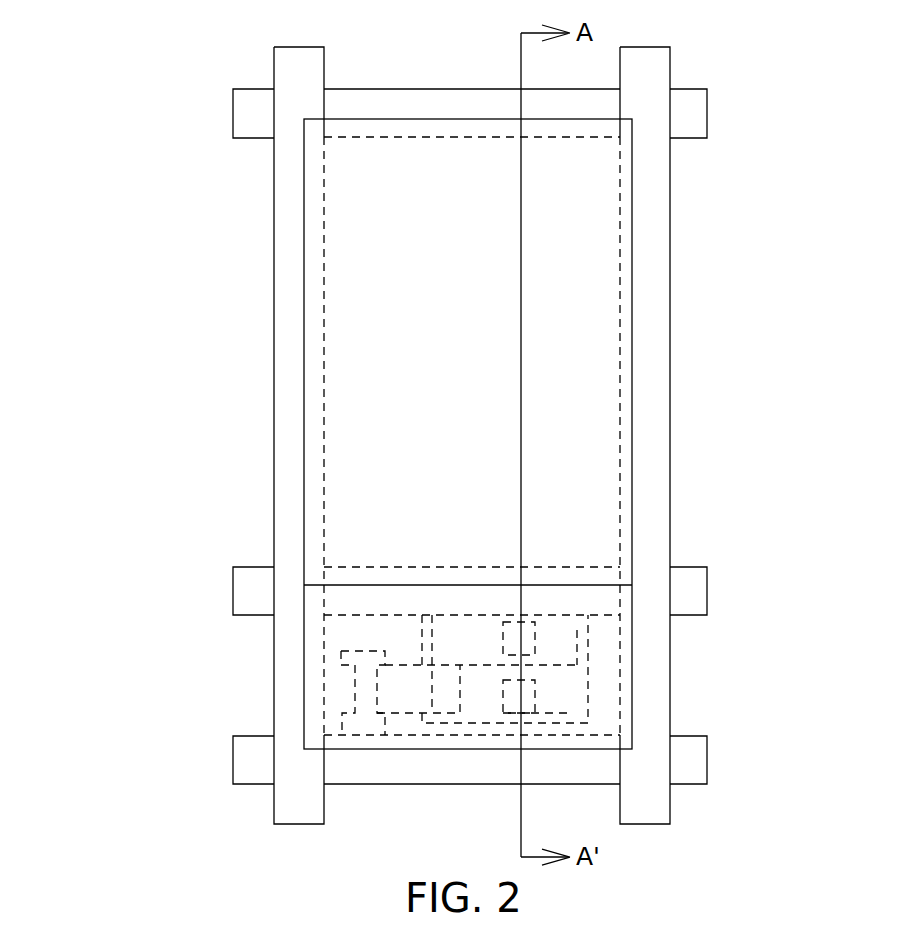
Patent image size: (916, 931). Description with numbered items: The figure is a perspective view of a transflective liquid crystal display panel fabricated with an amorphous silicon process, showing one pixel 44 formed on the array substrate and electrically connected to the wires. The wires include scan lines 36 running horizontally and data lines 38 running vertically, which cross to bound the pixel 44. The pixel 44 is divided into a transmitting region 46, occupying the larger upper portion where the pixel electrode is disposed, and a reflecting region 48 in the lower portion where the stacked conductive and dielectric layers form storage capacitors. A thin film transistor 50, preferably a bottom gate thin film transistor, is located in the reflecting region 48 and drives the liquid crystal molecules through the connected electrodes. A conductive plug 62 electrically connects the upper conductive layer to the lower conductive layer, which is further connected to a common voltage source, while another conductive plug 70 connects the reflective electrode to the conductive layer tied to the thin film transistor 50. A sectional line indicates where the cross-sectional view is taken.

The scan line 36 is at (240, 112).
The data line 38 is at (648, 448).
The pixel 44 is at (817, 153).
The transmitting region 46 is at (589, 365).
The reflecting region 48 is at (558, 683).
The thin film transistor 50 is at (367, 719).
The conductive plug 62 is at (527, 696).
The conductive plug 70 is at (527, 643).